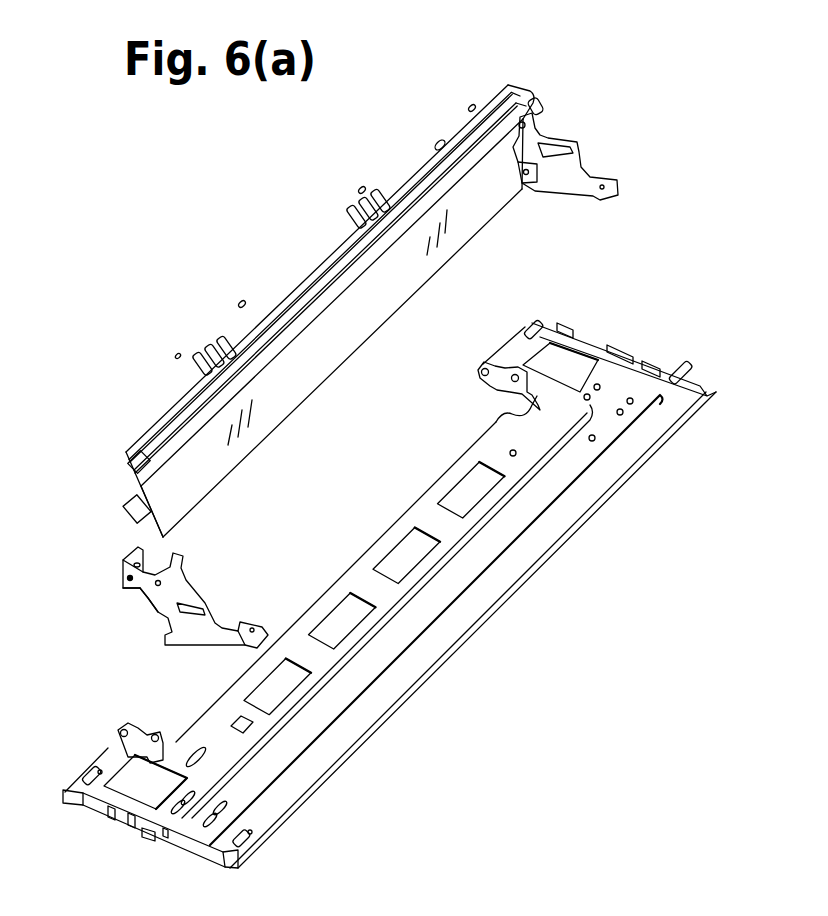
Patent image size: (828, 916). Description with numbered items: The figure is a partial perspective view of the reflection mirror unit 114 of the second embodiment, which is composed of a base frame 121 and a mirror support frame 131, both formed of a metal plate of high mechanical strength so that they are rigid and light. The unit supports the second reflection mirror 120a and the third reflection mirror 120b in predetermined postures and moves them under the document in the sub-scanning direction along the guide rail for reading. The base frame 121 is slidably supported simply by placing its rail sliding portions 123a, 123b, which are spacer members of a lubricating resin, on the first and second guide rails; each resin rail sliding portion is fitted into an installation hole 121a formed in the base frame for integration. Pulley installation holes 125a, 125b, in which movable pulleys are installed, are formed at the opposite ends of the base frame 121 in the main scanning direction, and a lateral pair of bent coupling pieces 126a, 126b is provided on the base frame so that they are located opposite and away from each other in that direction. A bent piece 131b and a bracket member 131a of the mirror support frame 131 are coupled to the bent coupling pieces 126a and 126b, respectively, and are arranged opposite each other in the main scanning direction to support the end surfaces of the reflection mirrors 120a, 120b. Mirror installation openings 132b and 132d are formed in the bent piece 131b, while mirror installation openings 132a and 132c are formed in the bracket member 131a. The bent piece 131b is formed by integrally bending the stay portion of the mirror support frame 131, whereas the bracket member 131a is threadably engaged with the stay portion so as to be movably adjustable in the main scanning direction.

The reflection mirror unit 114 is at (222, 206).
The second reflection mirror 120a is at (281, 327).
The third reflection mirror 120b is at (298, 403).
The base frame 121 is at (483, 598).
The installation hole 121a is at (524, 326).
The rail sliding portion 123a is at (121, 822).
The rail sliding portion 123b is at (617, 339).
The pulley installation hole 125a is at (133, 765).
The pulley installation hole 125b is at (571, 360).
The bent coupling piece 126a is at (143, 727).
The bent coupling piece 126b is at (505, 364).
The mirror support frame 131 is at (352, 233).
The bracket member 131a is at (178, 628).
The bent piece 131b is at (558, 168).
The mirror installation opening 132a is at (160, 554).
The mirror installation opening 132b is at (539, 108).
The mirror installation opening 132c is at (147, 605).
The mirror installation opening 132d is at (519, 184).